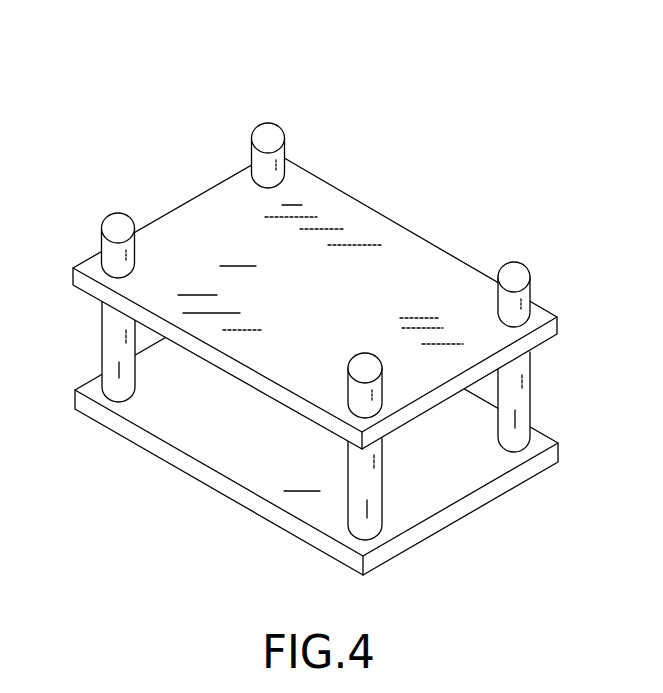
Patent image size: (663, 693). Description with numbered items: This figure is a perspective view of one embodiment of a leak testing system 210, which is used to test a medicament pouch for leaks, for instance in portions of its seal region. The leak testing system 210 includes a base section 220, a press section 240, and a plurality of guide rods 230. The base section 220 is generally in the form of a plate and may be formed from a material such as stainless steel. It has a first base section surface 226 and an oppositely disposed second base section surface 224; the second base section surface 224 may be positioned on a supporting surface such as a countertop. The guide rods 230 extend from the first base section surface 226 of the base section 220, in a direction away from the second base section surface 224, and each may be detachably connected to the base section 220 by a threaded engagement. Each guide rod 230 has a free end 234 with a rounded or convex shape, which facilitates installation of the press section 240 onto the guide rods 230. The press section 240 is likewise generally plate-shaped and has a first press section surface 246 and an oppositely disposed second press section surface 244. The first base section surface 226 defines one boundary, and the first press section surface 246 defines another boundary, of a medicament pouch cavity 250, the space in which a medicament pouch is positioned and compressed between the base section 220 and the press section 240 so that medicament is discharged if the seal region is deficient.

The leak testing system 210 is at (334, 302).
The base section 220 is at (314, 426).
The second base section surface 224 is at (432, 538).
The first base section surface 226 is at (167, 457).
The guide rods 230 is at (118, 340).
The free end 234 is at (118, 228).
The press section 240 is at (315, 300).
The second press section surface 244 is at (404, 228).
The first press section surface 246 is at (237, 382).
The medicament pouch cavity 250 is at (246, 443).